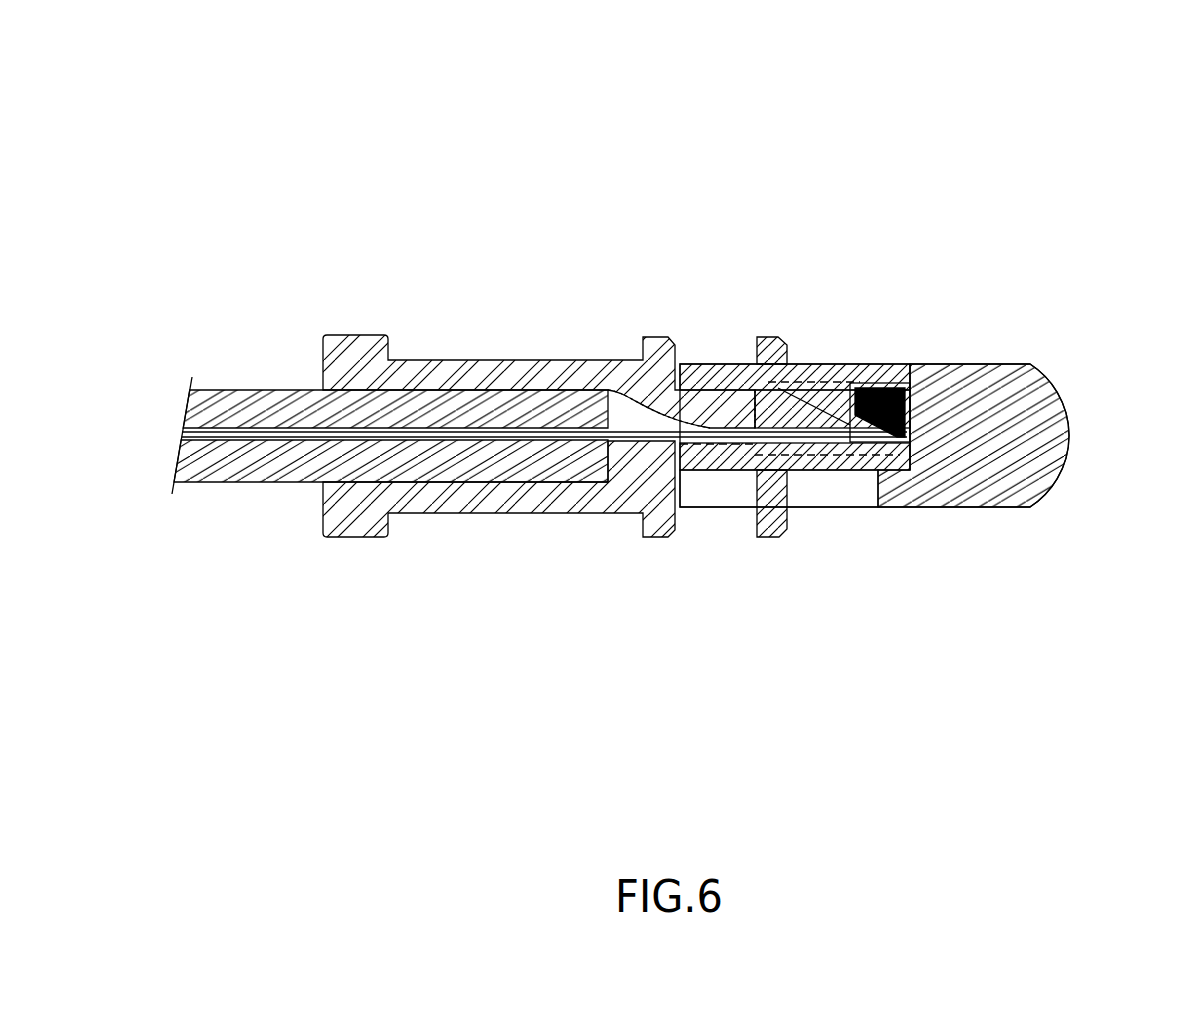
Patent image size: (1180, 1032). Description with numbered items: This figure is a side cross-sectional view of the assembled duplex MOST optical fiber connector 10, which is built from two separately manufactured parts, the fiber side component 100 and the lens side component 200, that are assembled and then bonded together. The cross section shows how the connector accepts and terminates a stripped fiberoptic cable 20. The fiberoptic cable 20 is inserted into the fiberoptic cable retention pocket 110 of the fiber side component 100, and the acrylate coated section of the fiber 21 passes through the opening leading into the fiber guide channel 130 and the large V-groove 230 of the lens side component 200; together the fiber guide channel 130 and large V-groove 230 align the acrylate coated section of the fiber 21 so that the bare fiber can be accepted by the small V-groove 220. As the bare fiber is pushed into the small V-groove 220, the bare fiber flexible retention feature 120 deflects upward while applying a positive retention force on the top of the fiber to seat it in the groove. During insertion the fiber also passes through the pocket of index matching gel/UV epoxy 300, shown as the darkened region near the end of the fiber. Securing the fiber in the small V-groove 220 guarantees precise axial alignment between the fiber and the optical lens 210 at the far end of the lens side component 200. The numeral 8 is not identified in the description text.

The duplex MOST optical fiber connector 10 is at (990, 110).
The fiberoptic cable 20 is at (217, 397).
The acrylate coated section of the fiber 21 is at (547, 437).
The fiber side component 100 is at (357, 337).
The fiberoptic cable retention pocket 110 is at (630, 460).
The bare fiber flexible retention feature 120 is at (840, 392).
The fiber guide channel 130 is at (735, 443).
The lens side component 200 is at (1067, 463).
The optical lens 210 is at (980, 383).
The small V-groove 220 is at (897, 440).
The large V-groove 230 is at (820, 445).
The pocket of index matching gel/UV epoxy 300 is at (885, 390).
The hidden line element 8 is at (823, 380).